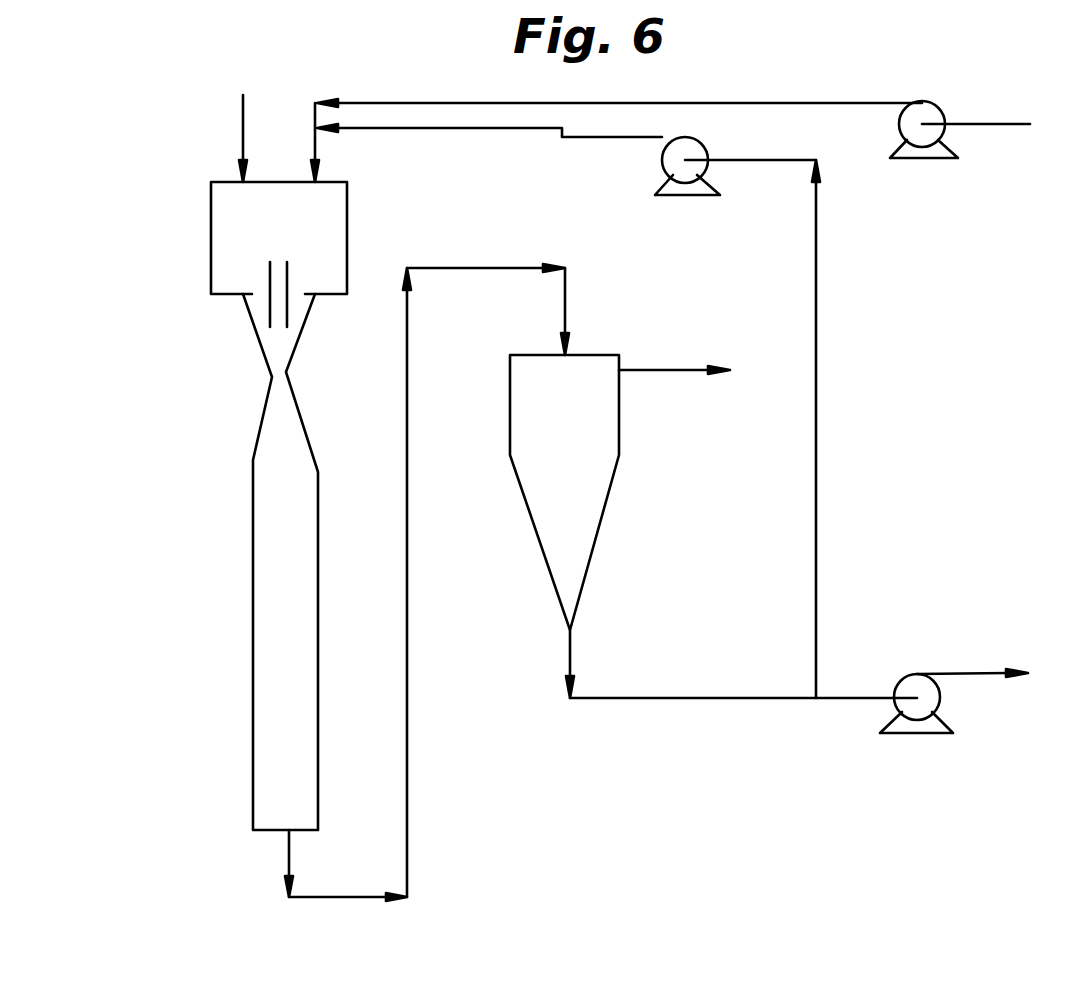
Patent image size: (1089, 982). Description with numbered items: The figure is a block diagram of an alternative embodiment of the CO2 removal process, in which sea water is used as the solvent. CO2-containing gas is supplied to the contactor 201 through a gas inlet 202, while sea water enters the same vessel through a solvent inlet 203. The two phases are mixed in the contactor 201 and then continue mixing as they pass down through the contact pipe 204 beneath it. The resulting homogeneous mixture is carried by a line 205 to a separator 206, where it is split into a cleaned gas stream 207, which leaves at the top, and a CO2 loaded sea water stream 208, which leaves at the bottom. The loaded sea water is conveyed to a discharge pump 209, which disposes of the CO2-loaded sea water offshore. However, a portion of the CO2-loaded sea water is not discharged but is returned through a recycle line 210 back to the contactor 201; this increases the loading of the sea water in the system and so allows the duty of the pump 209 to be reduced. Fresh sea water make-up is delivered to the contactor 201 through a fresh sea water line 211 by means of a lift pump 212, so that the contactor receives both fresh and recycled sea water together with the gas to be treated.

The contactor 201 is at (211, 244).
The gas inlet 202 is at (243, 118).
The solvent inlet 203 is at (318, 165).
The contact pipe 204 is at (253, 572).
The line 205 is at (408, 617).
The separator 206 is at (593, 522).
The cleaned gas stream 207 is at (648, 371).
The CO2 loaded sea water stream 208 is at (568, 652).
The discharge pump 209 is at (900, 733).
The recycle line 210 is at (817, 300).
The fresh sea water line 211 is at (873, 102).
The lift pump 212 is at (937, 108).